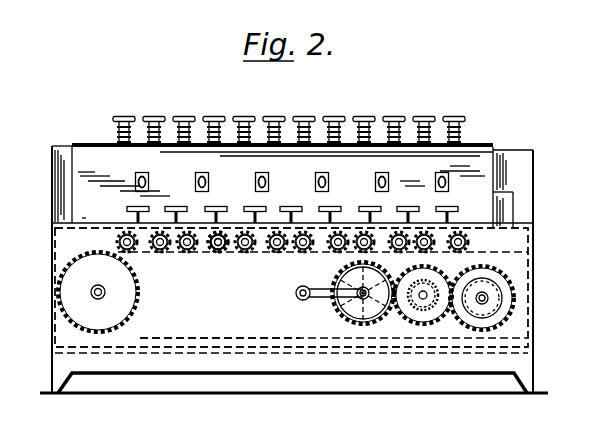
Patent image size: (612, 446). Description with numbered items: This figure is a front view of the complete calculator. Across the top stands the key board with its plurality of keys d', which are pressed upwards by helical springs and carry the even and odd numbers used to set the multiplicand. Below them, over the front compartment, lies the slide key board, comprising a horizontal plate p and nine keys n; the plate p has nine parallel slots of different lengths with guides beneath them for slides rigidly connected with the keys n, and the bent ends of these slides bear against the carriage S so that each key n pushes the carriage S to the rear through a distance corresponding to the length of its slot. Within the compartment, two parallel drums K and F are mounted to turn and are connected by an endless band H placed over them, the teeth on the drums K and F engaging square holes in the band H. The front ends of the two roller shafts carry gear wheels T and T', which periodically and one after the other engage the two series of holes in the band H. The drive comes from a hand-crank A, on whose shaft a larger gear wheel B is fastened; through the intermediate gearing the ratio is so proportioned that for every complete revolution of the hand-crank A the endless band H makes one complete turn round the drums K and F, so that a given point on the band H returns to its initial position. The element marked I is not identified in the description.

The keys d' is at (289, 120).
The carriage S is at (292, 176).
The keys n is at (263, 213).
The horizontal plate p is at (87, 211).
The gear wheel T is at (292, 259).
The gear wheel T' is at (214, 259).
The drum K is at (140, 298).
The endless band H is at (189, 338).
The hand-crank A is at (296, 294).
The gear wheel B is at (332, 310).
The gear wheels I is at (420, 259).
The drum F is at (490, 268).